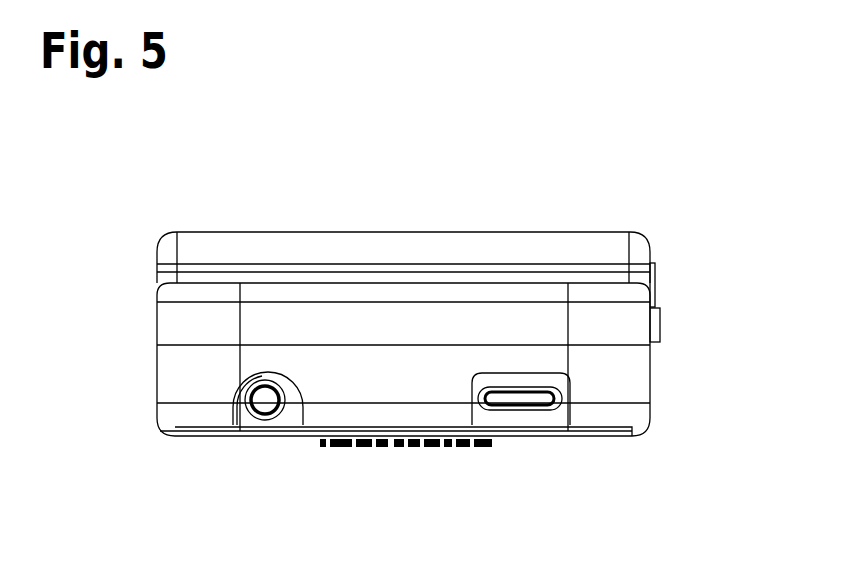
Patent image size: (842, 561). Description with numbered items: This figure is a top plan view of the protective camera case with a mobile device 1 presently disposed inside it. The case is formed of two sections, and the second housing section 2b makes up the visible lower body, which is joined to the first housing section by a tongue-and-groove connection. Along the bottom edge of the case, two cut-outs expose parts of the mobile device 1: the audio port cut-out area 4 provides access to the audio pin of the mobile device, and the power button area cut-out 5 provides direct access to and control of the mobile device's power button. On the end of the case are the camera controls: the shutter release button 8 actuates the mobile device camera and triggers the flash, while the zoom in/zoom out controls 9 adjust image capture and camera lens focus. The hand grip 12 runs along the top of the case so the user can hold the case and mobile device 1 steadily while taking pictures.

The mobile device 1 is at (290, 413).
The second housing section 2b is at (172, 376).
The audio port cut-out area 4 is at (302, 472).
The power button area cut-out 5 is at (567, 468).
The shutter release button 8 is at (657, 283).
The zoom in/zoom out controls 9 is at (660, 323).
The hand grip 12 is at (480, 247).